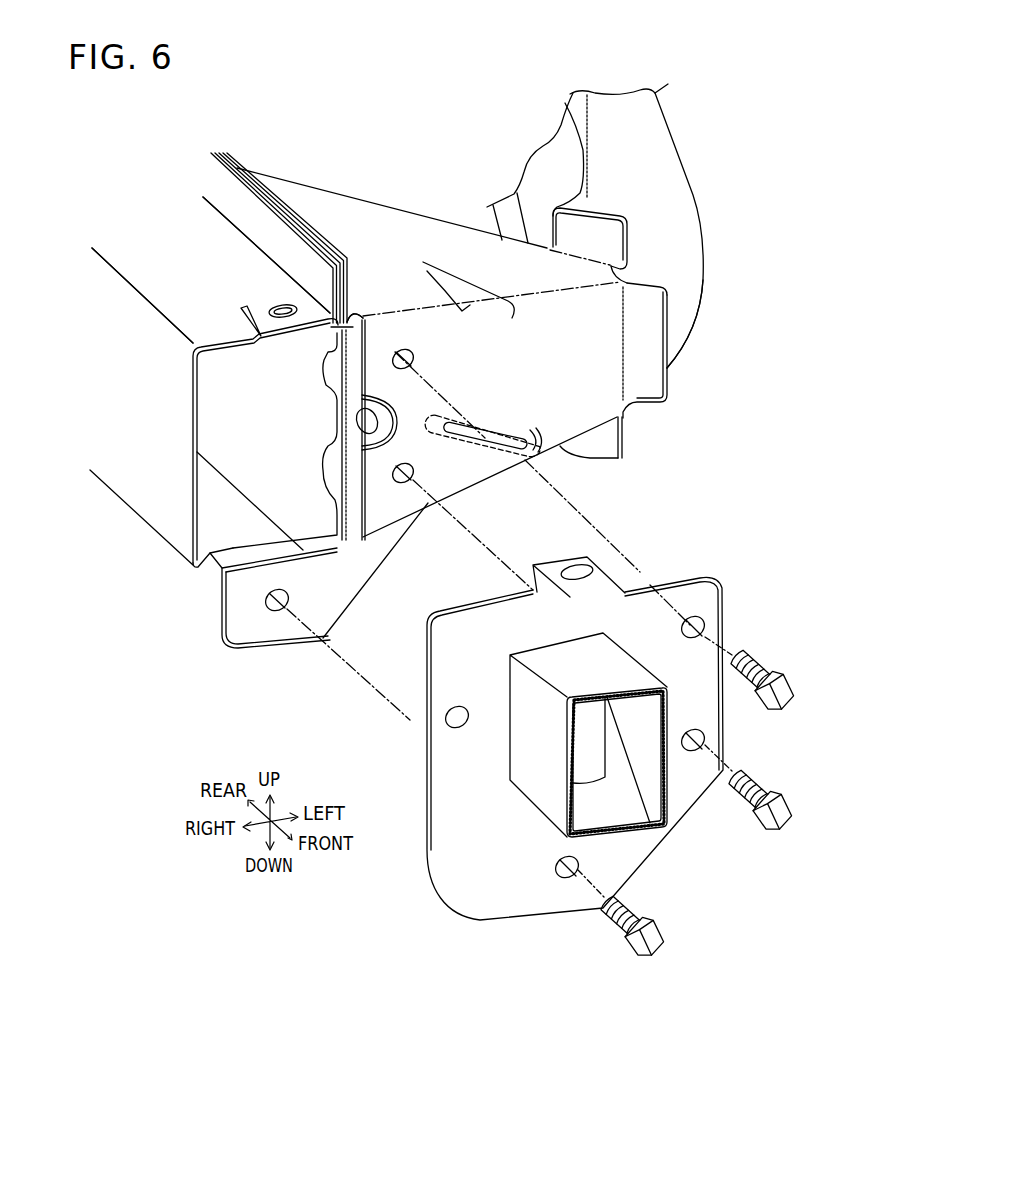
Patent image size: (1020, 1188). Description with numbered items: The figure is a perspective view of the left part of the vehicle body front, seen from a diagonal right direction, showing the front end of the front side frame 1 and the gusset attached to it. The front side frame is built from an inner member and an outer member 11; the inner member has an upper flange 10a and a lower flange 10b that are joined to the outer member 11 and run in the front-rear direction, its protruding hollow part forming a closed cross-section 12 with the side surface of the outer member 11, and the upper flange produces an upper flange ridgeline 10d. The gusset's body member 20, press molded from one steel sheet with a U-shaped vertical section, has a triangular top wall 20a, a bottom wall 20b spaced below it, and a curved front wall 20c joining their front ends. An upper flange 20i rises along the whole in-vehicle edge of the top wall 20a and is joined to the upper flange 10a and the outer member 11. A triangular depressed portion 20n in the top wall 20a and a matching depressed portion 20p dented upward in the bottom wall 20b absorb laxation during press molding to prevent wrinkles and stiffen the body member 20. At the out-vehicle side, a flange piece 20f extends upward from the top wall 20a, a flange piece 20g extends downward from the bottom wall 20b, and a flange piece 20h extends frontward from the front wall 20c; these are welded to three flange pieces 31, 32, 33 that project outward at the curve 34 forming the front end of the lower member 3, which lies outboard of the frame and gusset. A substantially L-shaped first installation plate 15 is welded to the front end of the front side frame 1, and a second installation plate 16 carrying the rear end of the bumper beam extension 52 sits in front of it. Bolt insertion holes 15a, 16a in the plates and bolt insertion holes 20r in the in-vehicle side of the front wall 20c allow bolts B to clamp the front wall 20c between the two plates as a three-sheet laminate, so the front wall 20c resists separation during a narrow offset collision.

The front side frame 1 is at (130, 527).
The lower member 3 is at (702, 167).
The upper flange 10a is at (290, 250).
The lower flange 10b is at (190, 280).
The upper flange ridgeline 10d is at (312, 297).
The outer member 11 is at (353, 313).
The closed cross-section 12 is at (279, 446).
The first installation plate 15 is at (246, 632).
The bolt insertion holes 15a is at (282, 614).
The body member 20 is at (325, 177).
The top wall 20a is at (393, 227).
The bottom wall 20b is at (458, 493).
The front wall 20c is at (537, 377).
The flange piece 20f is at (600, 240).
The flange piece 20g is at (600, 446).
The flange piece 20h is at (647, 320).
The upper flange 20i is at (353, 284).
The depressed portion 20n is at (470, 300).
The depressed portion 20p is at (497, 457).
The bolt insertion holes 20r is at (405, 374).
The flange piece 31 is at (628, 245).
The flange piece 32 is at (630, 433).
The flange piece 33 is at (660, 283).
The curve 34 is at (698, 252).
The second installation plate 16 is at (497, 860).
The bolt insertion holes 16a is at (712, 743).
The bumper beam extension 52 is at (607, 670).
The bolts B is at (765, 668).